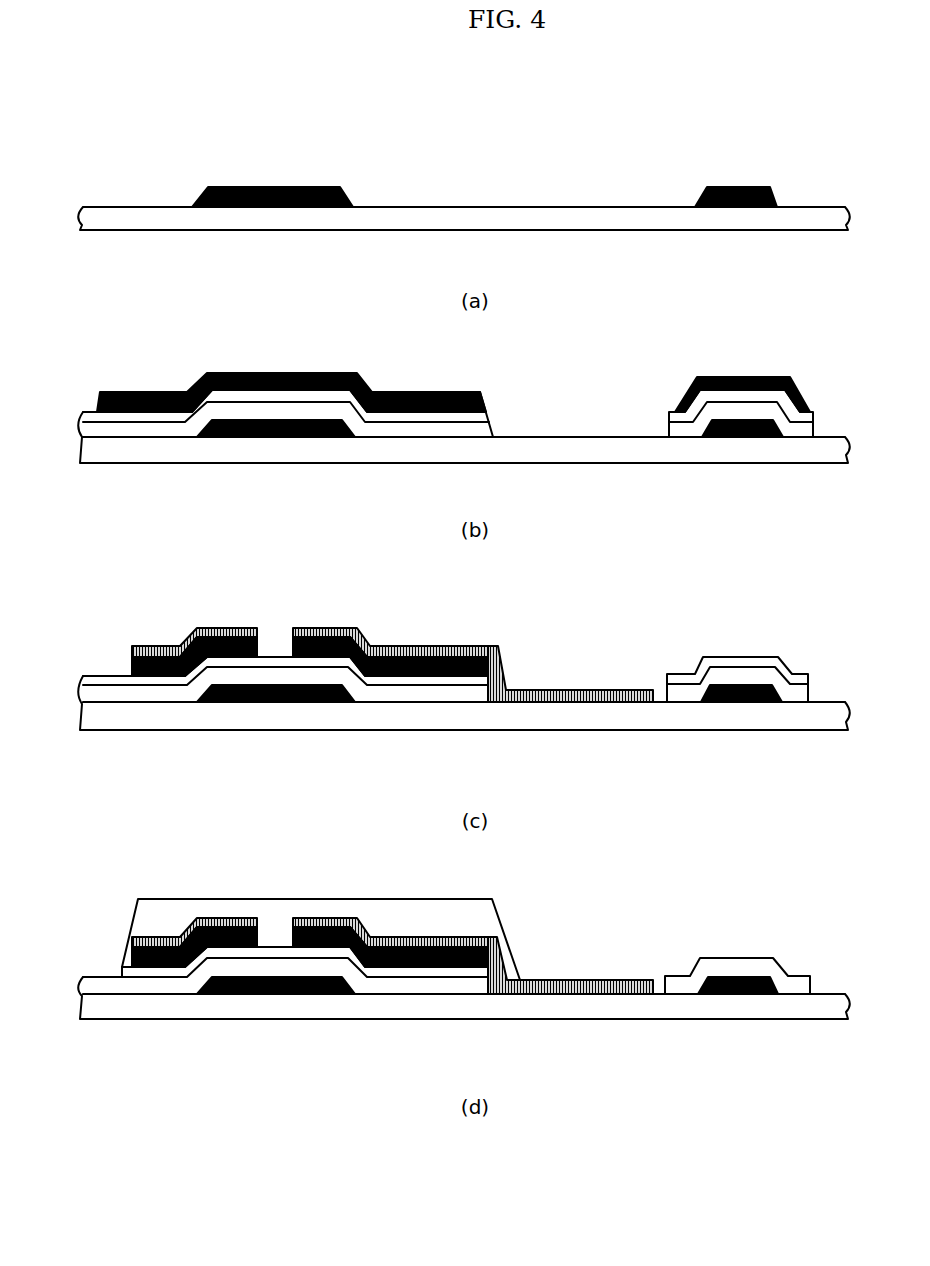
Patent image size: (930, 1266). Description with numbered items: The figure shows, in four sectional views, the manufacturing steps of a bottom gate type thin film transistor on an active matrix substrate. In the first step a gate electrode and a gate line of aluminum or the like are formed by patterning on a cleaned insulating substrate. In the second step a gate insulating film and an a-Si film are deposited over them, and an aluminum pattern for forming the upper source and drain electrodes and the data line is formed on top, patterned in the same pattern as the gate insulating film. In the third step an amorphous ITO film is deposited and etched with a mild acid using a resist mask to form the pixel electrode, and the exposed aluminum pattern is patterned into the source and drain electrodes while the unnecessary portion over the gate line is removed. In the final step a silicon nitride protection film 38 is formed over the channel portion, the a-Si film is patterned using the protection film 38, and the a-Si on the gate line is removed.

The protection film 38 is at (407, 898).